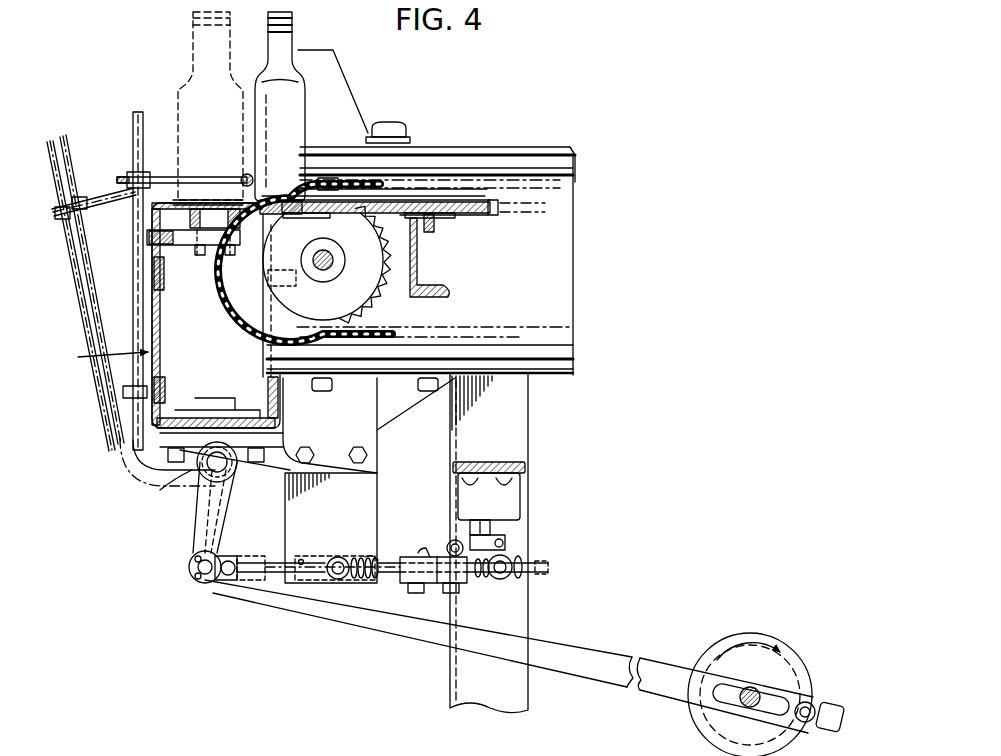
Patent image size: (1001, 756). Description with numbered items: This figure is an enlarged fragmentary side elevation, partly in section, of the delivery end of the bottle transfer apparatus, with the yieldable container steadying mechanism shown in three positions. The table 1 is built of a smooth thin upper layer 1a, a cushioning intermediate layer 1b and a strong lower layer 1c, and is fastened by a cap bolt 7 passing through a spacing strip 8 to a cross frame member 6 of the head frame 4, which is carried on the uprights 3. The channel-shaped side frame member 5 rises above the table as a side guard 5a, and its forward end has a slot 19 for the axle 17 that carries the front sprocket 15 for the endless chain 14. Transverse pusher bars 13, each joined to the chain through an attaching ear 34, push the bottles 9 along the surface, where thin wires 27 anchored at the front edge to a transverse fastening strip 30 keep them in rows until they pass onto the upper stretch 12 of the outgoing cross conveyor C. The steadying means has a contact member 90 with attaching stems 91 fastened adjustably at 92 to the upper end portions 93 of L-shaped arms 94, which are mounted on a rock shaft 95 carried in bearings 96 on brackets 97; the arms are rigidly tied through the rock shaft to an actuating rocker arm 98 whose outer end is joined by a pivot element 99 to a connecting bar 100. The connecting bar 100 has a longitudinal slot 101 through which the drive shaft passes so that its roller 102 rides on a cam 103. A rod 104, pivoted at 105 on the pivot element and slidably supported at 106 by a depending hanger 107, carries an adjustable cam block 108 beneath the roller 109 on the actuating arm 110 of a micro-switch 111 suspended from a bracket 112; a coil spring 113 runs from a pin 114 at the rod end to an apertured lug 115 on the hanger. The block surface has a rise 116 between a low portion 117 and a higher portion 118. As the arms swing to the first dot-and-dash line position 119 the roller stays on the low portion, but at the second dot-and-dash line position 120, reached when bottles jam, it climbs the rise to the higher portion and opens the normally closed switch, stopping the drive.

The table 1 is at (455, 199).
The upper layer 1a is at (492, 203).
The intermediate layer 1b is at (499, 214).
The lower layer 1c is at (493, 213).
The uprights 3 is at (528, 406).
The head frame 4 is at (537, 148).
The side frame member 5 is at (560, 275).
The side guard 5a is at (578, 180).
The cross frame member 6 is at (418, 276).
The cap bolt 7 is at (430, 228).
The spacing strip 8 is at (449, 222).
The bottle 9 is at (284, 48).
The upper stretch 12 is at (220, 246).
The transverse pusher bar 13 is at (308, 178).
The endless chain 14 is at (265, 308).
The front sprocket 15 is at (370, 290).
The axle 17 is at (333, 258).
The slot 19 is at (297, 288).
The wire 27 is at (405, 194).
The transverse fastening strip 30 is at (275, 213).
The attaching ear 34 is at (329, 186).
The contact member 90 is at (185, 177).
The attaching stem 91 is at (245, 177).
The adjustable fastening 92 is at (130, 172).
The upper end portion 93 is at (136, 225).
The arm 94 is at (130, 452).
The rock shaft 95 is at (190, 478).
The bearing 96 is at (241, 473).
The bracket 97 is at (402, 428).
The link 98 is at (205, 541).
The pivot element 99 is at (196, 574).
The connecting bar 100 is at (572, 653).
The longitudinal slot 101 is at (730, 697).
The roller 102 is at (810, 730).
The cam 103 is at (797, 652).
The rod 104 is at (277, 568).
The pivotal mounting 105 is at (197, 566).
The sliding support 106 is at (301, 552).
The hanger 107 is at (368, 491).
The cam block 108 is at (450, 582).
The roller 109 is at (452, 541).
The actuating arm 110 is at (510, 548).
The micro-switch 111 is at (513, 498).
The bracket 112 is at (514, 463).
The coil spring 113 is at (371, 552).
The pin 114 is at (491, 583).
The apertured lug 115 is at (329, 576).
The rise 116 is at (434, 583).
The low portion 117 is at (440, 584).
The higher portion 118 is at (418, 553).
The first dot-and-dash line position 119 is at (64, 137).
The second dot-and-dash line position 120 is at (54, 140).
The outgoing cross conveyor C is at (103, 358).